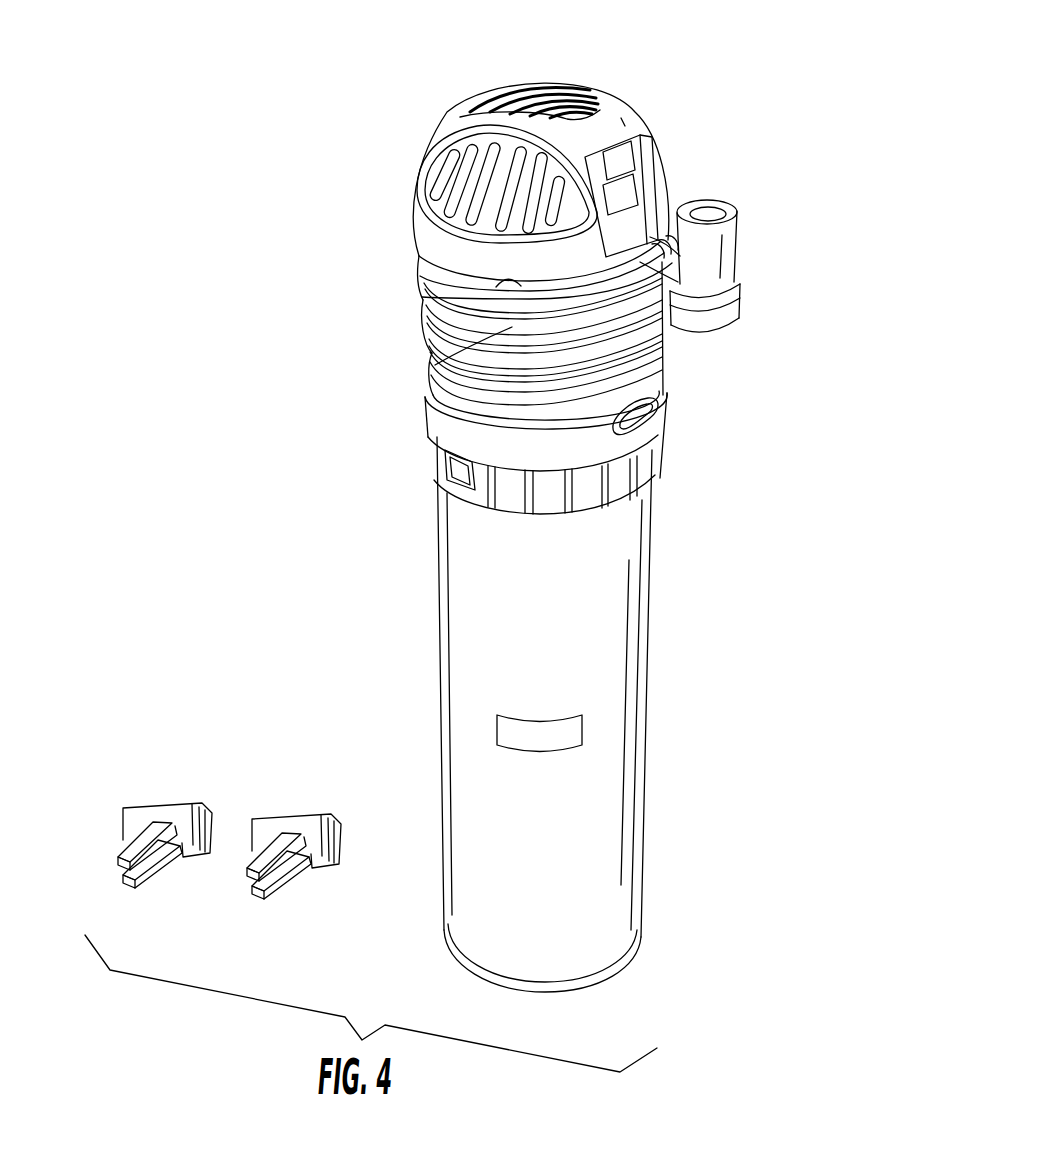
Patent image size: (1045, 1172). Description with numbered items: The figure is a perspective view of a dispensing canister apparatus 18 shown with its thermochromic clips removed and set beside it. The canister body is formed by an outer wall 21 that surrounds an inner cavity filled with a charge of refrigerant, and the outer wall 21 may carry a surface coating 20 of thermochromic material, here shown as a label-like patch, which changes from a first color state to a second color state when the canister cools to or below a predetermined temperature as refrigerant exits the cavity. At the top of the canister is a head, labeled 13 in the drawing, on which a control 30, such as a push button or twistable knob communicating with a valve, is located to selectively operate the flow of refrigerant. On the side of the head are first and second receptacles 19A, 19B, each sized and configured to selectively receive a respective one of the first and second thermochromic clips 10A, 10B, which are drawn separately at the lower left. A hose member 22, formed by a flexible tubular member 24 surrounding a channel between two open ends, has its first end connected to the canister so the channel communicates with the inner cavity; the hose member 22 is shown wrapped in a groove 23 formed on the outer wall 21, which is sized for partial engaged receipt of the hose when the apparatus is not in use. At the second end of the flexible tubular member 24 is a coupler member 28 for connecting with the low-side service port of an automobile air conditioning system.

The dispensing canister apparatus 18 is at (350, 100).
The head housing 13 is at (620, 104).
The control 30 is at (556, 84).
The first receptacle 19A is at (627, 164).
The second receptacle 19B is at (623, 200).
The coupler member 28 is at (732, 320).
The hose member 22 is at (426, 310).
The groove 23 is at (472, 355).
The flexible tubular member 24 is at (672, 358).
The outer wall 21 is at (640, 603).
The surface coating 20 is at (584, 736).
The first thermochromic clip 10A is at (127, 781).
The second thermochromic clip 10B is at (272, 793).